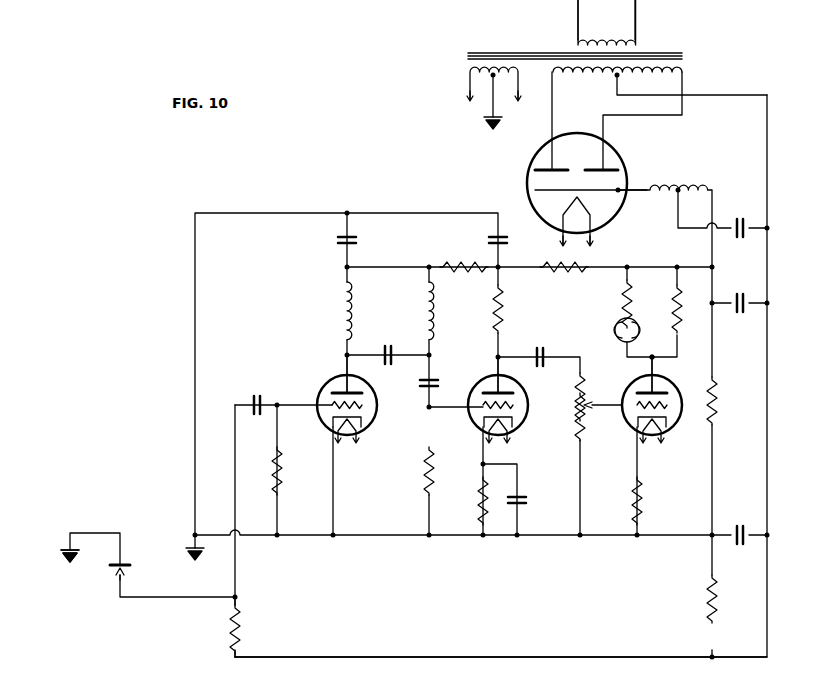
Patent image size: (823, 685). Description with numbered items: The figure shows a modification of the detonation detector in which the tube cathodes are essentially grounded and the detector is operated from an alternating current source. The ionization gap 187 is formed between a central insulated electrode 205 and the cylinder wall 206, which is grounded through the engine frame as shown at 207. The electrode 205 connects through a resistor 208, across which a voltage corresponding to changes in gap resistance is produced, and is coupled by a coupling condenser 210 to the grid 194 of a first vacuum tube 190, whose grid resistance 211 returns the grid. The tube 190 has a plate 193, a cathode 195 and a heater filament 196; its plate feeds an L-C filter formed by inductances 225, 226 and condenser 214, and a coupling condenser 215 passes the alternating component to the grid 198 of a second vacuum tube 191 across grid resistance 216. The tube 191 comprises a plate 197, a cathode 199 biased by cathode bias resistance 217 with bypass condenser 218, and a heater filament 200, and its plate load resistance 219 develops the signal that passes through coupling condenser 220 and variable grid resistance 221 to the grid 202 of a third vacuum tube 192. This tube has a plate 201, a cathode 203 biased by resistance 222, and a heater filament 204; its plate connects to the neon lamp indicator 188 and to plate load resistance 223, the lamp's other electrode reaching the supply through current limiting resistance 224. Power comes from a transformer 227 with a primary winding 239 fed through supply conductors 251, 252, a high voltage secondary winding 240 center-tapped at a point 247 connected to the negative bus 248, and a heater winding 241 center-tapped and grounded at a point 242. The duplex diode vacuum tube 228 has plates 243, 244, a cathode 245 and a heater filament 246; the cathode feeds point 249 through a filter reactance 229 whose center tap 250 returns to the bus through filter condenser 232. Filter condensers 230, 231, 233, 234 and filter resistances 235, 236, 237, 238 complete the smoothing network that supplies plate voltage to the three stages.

The ionization gap 187 is at (117, 565).
The neon lamp indicator 188 is at (616, 331).
The vacuum tube 190 is at (349, 445).
The vacuum tube 191 is at (499, 412).
The vacuum tube 192 is at (647, 445).
The plate 193 is at (333, 374).
The grid 194 is at (373, 396).
The cathode 195 is at (373, 470).
The heater filament 196 is at (370, 438).
The plate 197 is at (483, 375).
The grid 198 is at (524, 393).
The cathode 199 is at (525, 434).
The heater filament 200 is at (523, 438).
The plate 201 is at (635, 374).
The grid 202 is at (631, 416).
The cathode 203 is at (669, 476).
The heater filament 204 is at (670, 440).
The central insulated electrode 205 is at (104, 576).
The cylinder wall 206 is at (123, 564).
The ground 207 is at (66, 558).
The resistor 208 is at (242, 616).
The coupling condenser 210 is at (258, 396).
The grid resistance 211 is at (273, 466).
The condenser 214 is at (387, 345).
The coupling condenser 215 is at (434, 378).
The grid resistance 216 is at (426, 465).
The cathode bias resistance 217 is at (480, 500).
The cathode bypass condenser 218 is at (524, 500).
The plate load resistance 219 is at (495, 317).
The coupling condenser 220 is at (540, 344).
The variable grid resistance 221 is at (578, 395).
The cathode bias resistance 222 is at (640, 498).
The plate load resistance 223 is at (674, 304).
The current limiting resistance 224 is at (622, 296).
The inductance 225 is at (352, 306).
The inductance 226 is at (434, 306).
The power transformer 227 is at (523, 64).
The duplex diode vacuum tube 228 is at (580, 167).
The filter reactance 229 is at (670, 186).
The filter condenser 230 is at (337, 241).
The filter condenser 231 is at (492, 241).
The filter condenser 232 is at (746, 203).
The filter condenser 233 is at (740, 308).
The filter condenser 234 is at (742, 525).
The filter resistance 235 is at (458, 263).
The filter resistance 236 is at (562, 271).
The filter resistance 237 is at (716, 401).
The filter resistance 238 is at (704, 598).
The primary winding 239 is at (611, 45).
The high voltage secondary winding 240 is at (592, 74).
The heater exciting voltage winding 241 is at (495, 92).
The center tap 242 is at (493, 76).
The plate 243 is at (537, 169).
The second plate 244 is at (616, 165).
The cathode 245 is at (533, 188).
The heater filament 246 is at (590, 211).
The center tap point 247 is at (618, 76).
The negative bus 248 is at (503, 645).
The point 249 is at (712, 267).
The center tap point 250 is at (678, 192).
The supply conductor 251 is at (578, 15).
The supply conductor 252 is at (635, 15).